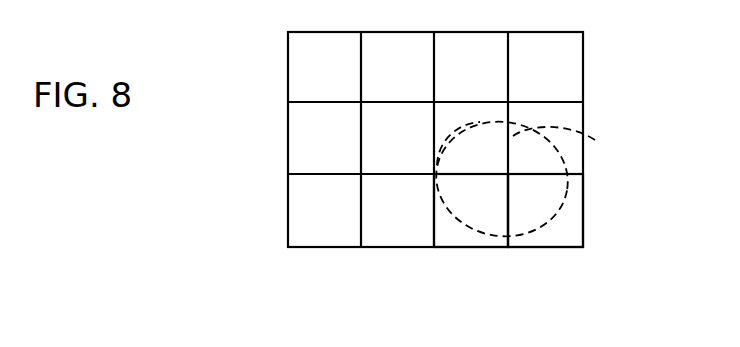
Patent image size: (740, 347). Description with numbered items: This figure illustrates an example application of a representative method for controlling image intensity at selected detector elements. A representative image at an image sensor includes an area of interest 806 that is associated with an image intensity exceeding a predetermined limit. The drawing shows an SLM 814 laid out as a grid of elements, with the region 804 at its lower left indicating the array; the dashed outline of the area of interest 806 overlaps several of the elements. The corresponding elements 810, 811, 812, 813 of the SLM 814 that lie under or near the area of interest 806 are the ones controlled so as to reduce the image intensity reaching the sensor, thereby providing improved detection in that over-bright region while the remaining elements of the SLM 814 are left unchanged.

The sensor array 804 is at (302, 247).
The area of interest 806 is at (579, 148).
The element 810 is at (545, 247).
The element 811 is at (470, 247).
The element 812 is at (575, 175).
The element 813 is at (473, 122).
The SLM 814 is at (583, 55).